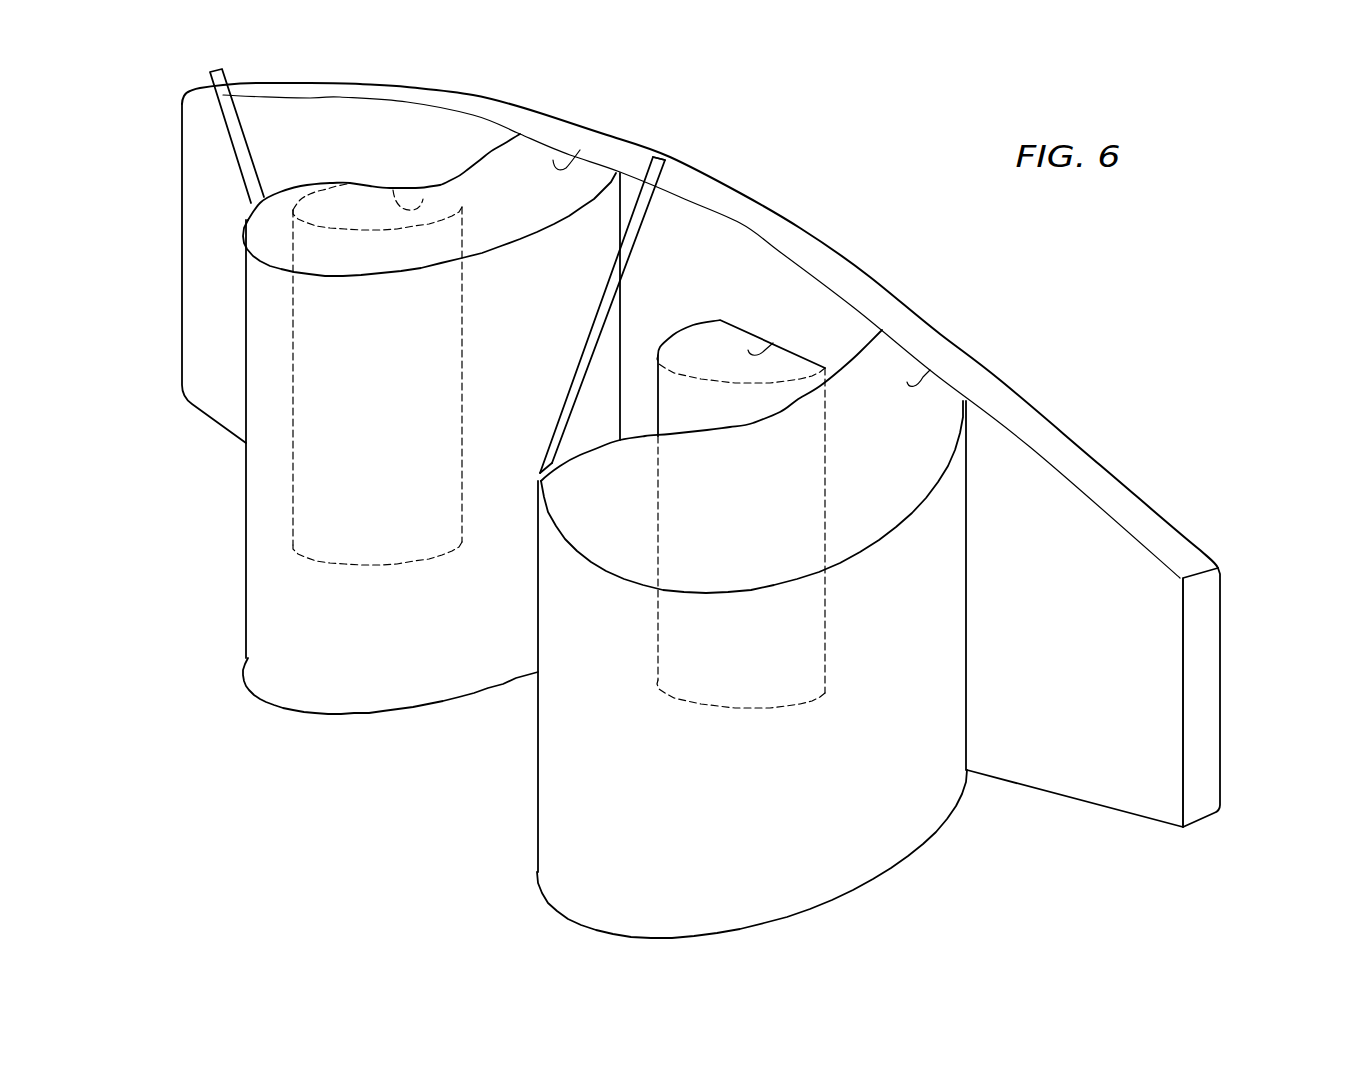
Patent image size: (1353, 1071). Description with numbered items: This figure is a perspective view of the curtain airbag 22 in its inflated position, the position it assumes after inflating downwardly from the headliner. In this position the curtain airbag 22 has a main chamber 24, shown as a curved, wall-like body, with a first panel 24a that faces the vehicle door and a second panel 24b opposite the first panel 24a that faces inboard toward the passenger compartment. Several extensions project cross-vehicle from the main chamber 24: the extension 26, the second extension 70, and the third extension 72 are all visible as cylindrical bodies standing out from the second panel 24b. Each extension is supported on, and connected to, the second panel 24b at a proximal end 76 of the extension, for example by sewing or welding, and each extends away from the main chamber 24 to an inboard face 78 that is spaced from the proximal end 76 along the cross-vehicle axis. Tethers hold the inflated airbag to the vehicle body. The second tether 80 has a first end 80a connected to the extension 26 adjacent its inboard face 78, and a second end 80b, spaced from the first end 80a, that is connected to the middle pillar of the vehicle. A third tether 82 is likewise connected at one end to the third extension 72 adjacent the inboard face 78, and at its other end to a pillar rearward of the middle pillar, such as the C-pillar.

The curtain airbag 22 is at (1040, 380).
The main chamber 24 is at (1062, 457).
The first panel 24a is at (1225, 667).
The second panel 24b is at (1148, 596).
The extension 26 is at (970, 651).
The second extension 70 is at (720, 319).
The third extension 72 is at (345, 182).
The proximal end 76 is at (392, 188).
The inboard face 78 is at (712, 398).
The second tether 80 is at (583, 357).
The first end 80a is at (545, 467).
The second end 80b is at (666, 164).
The third tether 82 is at (252, 139).